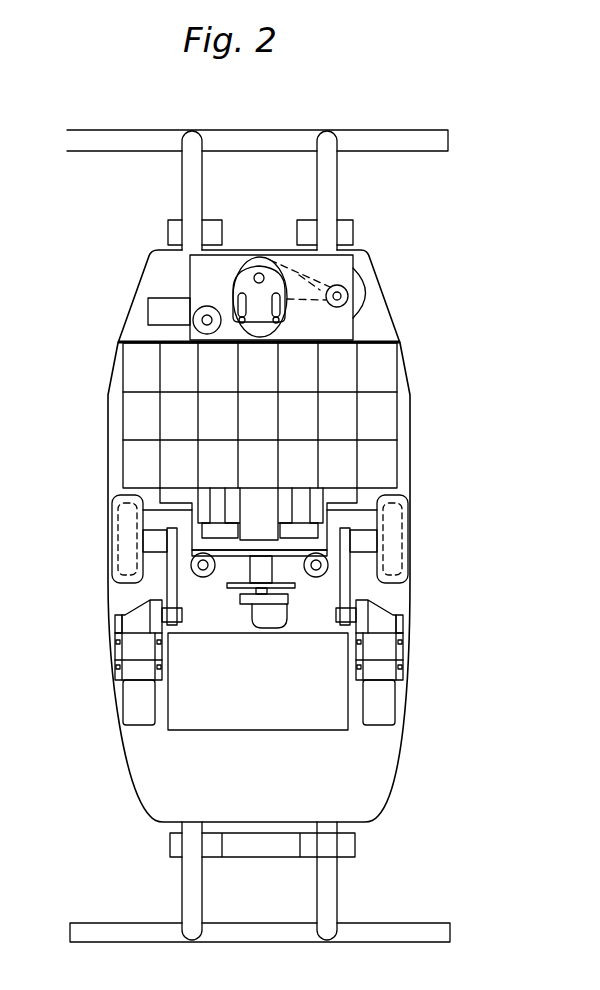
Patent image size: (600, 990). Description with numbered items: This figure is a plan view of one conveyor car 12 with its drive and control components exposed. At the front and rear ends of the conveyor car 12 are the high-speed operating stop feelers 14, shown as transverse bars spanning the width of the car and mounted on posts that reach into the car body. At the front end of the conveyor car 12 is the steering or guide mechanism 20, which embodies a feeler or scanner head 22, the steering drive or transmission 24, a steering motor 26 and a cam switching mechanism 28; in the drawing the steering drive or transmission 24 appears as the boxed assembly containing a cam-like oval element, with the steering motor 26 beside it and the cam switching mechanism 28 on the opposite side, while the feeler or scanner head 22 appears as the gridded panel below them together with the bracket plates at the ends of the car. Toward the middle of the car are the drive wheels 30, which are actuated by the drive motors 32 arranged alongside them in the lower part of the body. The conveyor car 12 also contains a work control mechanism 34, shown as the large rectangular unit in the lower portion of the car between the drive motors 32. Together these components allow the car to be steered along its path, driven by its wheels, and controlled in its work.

The conveyor car 12 is at (104, 506).
The high-speed operating stop feelers 14 is at (449, 141).
The steering or guide mechanism 20 is at (380, 241).
The feeler or scanner head 22 is at (279, 228).
The steering drive or transmission 24 is at (244, 292).
The steering motor 26 is at (148, 308).
The cam switching mechanism 28 is at (395, 312).
The drive wheels 30 is at (113, 557).
The drive motors 32 is at (378, 648).
The work control mechanism 34 is at (262, 703).